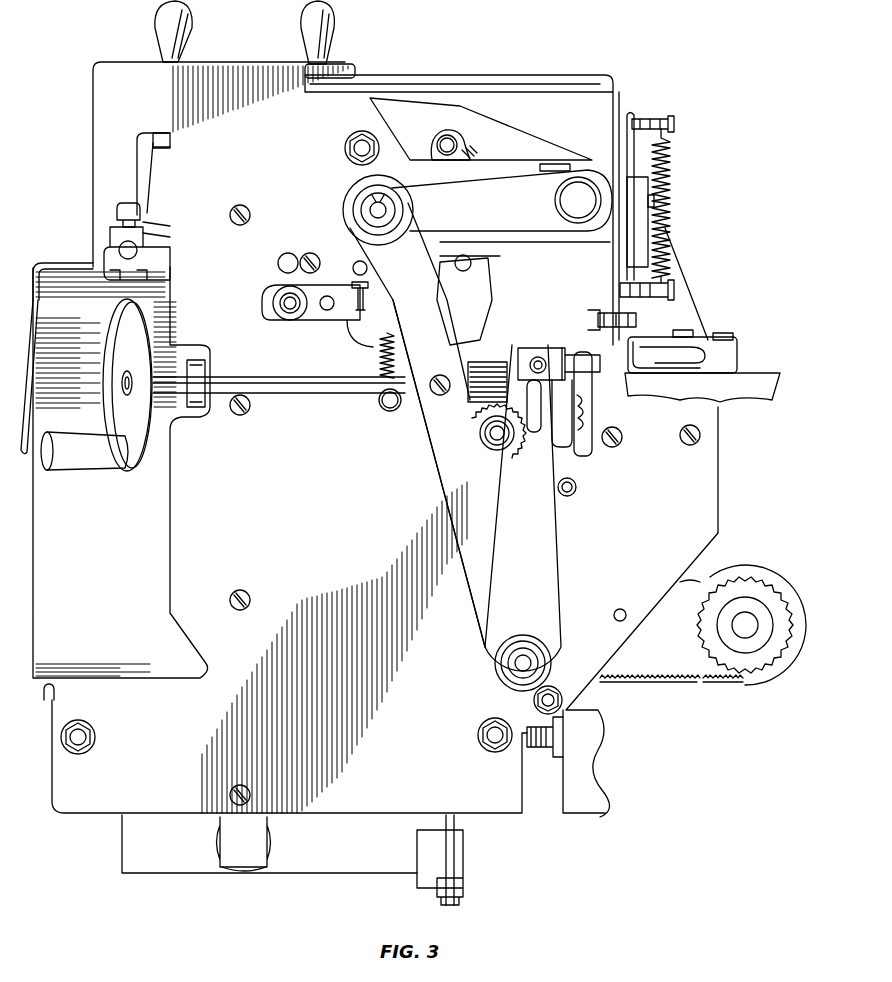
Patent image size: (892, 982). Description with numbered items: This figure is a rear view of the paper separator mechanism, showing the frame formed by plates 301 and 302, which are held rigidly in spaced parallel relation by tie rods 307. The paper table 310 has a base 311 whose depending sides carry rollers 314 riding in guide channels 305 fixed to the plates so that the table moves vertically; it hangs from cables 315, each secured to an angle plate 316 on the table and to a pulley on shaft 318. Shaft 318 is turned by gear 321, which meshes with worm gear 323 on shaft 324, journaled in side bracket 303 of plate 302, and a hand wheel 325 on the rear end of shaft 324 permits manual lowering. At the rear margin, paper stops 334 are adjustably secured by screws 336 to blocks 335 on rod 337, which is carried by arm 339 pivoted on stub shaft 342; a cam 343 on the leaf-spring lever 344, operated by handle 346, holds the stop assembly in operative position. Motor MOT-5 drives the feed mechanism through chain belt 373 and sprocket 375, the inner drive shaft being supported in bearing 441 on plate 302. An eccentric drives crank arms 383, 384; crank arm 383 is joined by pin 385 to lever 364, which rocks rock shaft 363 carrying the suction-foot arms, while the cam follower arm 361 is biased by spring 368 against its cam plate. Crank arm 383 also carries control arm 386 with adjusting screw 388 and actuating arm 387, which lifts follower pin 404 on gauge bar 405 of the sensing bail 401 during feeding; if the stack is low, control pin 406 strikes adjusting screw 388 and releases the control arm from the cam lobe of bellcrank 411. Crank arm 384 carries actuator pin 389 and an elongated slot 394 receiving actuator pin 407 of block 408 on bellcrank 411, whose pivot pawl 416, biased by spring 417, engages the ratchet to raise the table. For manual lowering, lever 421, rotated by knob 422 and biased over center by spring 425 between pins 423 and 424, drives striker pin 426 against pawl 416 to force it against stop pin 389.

The plate 301 is at (93, 100).
The plate 302 is at (490, 813).
The side bracket 303 is at (204, 372).
The guide channel 305 is at (262, 860).
The tie rod 307 is at (346, 149).
The paper table 310 is at (171, 889).
The base 311 is at (50, 694).
The roller 314 is at (270, 838).
The cable 315 is at (455, 847).
The angle plate 316 is at (463, 868).
The shaft 318 is at (488, 445).
The gear 321 is at (480, 430).
The worm gear 323 is at (470, 412).
The shaft 324 is at (348, 396).
The hand wheel 325 is at (110, 418).
The paper stop 334 is at (86, 272).
The block 335 is at (104, 246).
The screw 336 is at (117, 210).
The rod 337 is at (128, 260).
The arm 339 is at (160, 236).
The stub shaft 342 is at (278, 264).
The cam 343 is at (168, 178).
The lever 344 is at (162, 133).
The handle 346 is at (192, 14).
The cam follower arm 361 is at (452, 138).
The rock shaft 363 is at (560, 203).
The lever 364 is at (462, 188).
The spring 368 is at (470, 150).
The chain belt 373 is at (652, 682).
The chain sprocket 375 is at (700, 640).
The crank arm 383 is at (430, 458).
The crank arm 384 is at (545, 516).
The pin 385 is at (395, 210).
The control arm 386 is at (370, 347).
The actuating arm 387 is at (452, 352).
The adjusting screw 388 is at (354, 264).
The actuator pin 389 is at (628, 314).
The elongated slot 394 is at (534, 432).
The bail 401 is at (280, 315).
The follower pin 404 is at (480, 240).
The gauge bar 405 is at (322, 320).
The control pin 406 is at (360, 260).
The actuator pin 407 is at (538, 357).
The block 408 is at (540, 360).
The bellcrank 411 is at (570, 455).
The pivot pawl 416 is at (590, 450).
The spring 417 is at (594, 412).
The lever 421 is at (425, 82).
The knob 422 is at (335, 14).
The pin 423 is at (677, 124).
The pin 424 is at (676, 290).
The spring 425 is at (674, 162).
The striker pin 426 is at (622, 338).
The bearing 441 is at (560, 595).
The motor MOT-5 is at (748, 632).